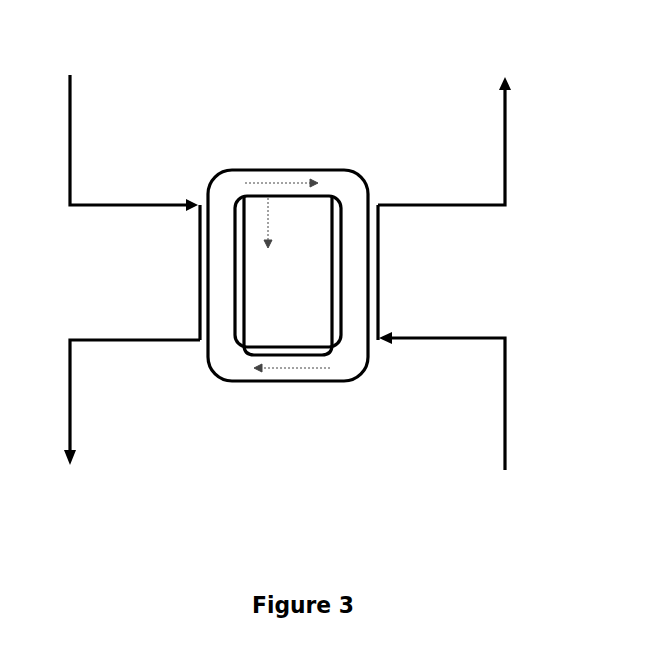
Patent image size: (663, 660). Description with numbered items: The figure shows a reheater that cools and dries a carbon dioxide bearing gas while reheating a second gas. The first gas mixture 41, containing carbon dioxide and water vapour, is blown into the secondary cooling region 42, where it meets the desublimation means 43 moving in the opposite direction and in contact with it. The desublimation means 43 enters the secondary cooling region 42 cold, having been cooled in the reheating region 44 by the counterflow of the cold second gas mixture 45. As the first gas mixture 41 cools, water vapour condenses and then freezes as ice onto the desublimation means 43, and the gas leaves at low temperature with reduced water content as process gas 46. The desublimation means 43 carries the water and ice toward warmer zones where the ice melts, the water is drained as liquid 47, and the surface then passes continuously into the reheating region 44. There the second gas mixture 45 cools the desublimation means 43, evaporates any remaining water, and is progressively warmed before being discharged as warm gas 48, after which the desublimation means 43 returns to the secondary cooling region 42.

The first gas mixture 41 is at (126, 123).
The secondary cooling region 42 is at (205, 272).
The desublimation means 43 is at (272, 170).
The reheating region 44 is at (375, 287).
The second gas mixture 45 is at (450, 419).
The process gas 46 is at (130, 423).
The liquid 47 is at (288, 275).
The warm gas 48 is at (449, 125).